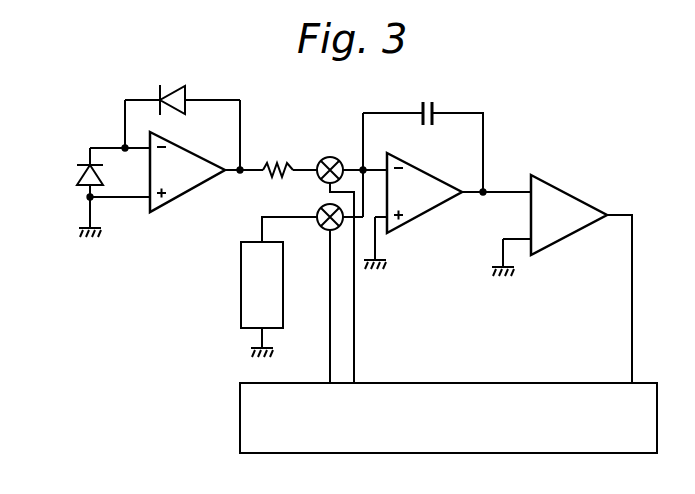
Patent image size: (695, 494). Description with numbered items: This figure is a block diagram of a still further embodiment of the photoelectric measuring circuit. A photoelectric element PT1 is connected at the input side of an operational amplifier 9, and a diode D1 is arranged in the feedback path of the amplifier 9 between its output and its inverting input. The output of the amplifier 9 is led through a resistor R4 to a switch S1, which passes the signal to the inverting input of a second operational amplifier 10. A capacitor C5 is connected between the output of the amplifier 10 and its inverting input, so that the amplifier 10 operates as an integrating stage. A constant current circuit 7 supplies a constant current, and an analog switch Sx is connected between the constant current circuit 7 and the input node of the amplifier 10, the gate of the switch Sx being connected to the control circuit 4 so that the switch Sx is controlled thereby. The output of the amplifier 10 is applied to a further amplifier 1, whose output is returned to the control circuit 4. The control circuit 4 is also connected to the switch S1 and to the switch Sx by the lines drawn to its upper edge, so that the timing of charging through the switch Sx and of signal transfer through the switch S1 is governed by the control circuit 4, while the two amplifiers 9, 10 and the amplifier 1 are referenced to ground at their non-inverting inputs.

The photoelectric element PT1 is at (72, 168).
The diode D1 is at (169, 90).
The operational amplifier 9 is at (187, 172).
The resistor R4 is at (278, 162).
The switch S1 is at (328, 156).
The analog switch Sx is at (318, 208).
The capacitor C5 is at (427, 100).
The integrating operational amplifier 10 is at (424, 193).
The amplifier 1 is at (569, 215).
The constant current circuit 7 is at (262, 285).
The control circuit 4 is at (448, 418).